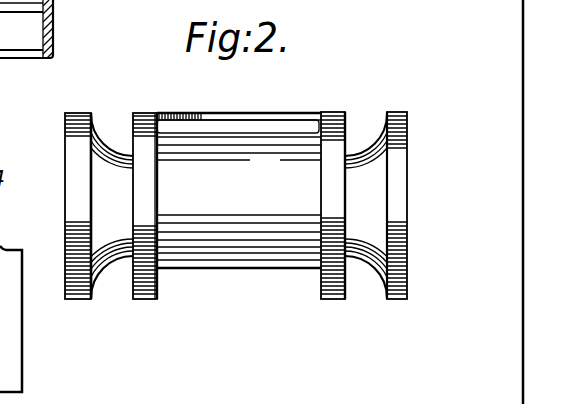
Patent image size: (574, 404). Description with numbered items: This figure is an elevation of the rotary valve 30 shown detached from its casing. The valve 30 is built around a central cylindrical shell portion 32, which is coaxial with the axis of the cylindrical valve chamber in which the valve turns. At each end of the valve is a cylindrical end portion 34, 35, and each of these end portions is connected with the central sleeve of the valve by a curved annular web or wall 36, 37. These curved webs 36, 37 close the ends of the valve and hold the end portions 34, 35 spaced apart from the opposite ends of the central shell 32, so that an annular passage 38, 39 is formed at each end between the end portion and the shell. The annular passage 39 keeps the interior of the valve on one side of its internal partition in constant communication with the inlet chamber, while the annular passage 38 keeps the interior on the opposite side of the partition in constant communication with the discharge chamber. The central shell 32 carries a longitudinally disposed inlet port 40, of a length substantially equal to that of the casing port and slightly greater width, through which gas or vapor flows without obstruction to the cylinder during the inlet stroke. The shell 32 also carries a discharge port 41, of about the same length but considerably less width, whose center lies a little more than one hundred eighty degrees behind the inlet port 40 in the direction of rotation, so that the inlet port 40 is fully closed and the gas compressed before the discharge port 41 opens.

The rotary valve 30 is at (308, 248).
The central cylindrical shell portion 32 is at (239, 213).
The cylindrical end portion 34 is at (78, 149).
The cylindrical end portion 35 is at (395, 112).
The curved annular web 36 is at (124, 206).
The curved annular web 37 is at (354, 205).
The annular passage 38 is at (112, 270).
The annular passage 39 is at (366, 271).
The inlet port 40 is at (226, 275).
The discharge port 41 is at (205, 128).